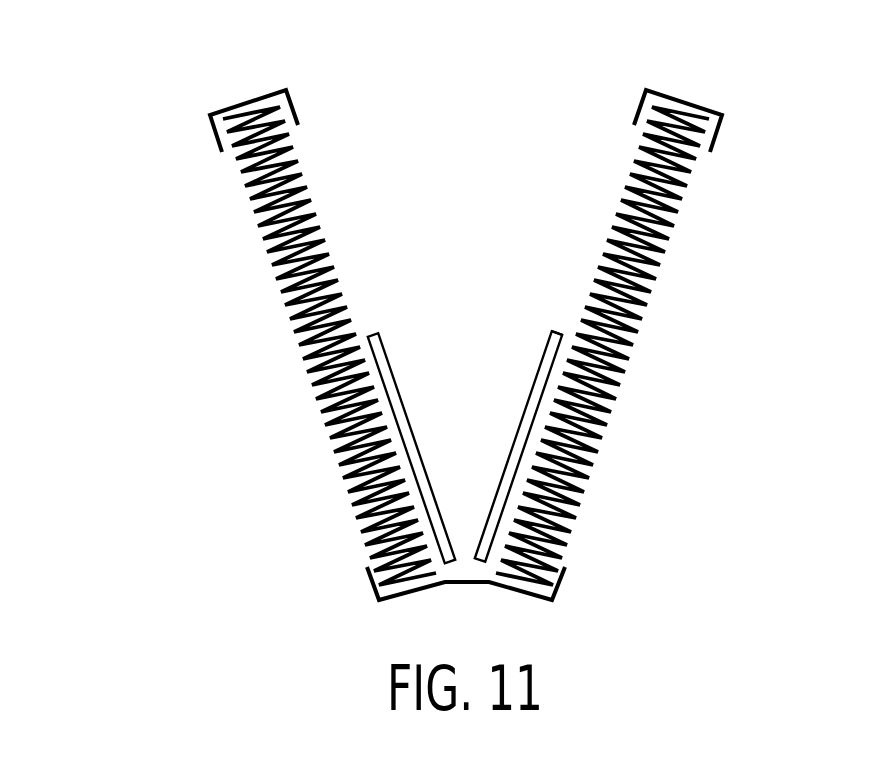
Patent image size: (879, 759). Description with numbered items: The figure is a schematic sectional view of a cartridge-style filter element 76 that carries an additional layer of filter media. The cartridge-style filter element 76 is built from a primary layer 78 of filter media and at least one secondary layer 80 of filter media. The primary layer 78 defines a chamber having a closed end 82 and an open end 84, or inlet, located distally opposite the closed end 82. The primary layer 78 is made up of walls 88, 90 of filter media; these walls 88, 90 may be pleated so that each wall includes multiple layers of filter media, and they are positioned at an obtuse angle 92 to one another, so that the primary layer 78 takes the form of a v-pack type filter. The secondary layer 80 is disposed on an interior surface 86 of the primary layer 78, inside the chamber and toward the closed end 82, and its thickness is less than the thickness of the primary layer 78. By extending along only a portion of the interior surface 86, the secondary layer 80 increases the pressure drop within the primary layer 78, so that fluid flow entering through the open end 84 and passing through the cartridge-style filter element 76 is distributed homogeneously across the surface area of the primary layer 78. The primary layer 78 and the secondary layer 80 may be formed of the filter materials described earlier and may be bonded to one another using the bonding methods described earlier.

The cartridge-style filter element 76 is at (132, 190).
The primary layer 78 is at (620, 275).
The secondary layer 80 is at (517, 438).
The closed end 82 is at (448, 574).
The open end 84 is at (418, 113).
The interior surface 86 is at (563, 331).
The wall 88 is at (670, 192).
The wall 90 is at (293, 318).
The obtuse angle 92 is at (473, 596).